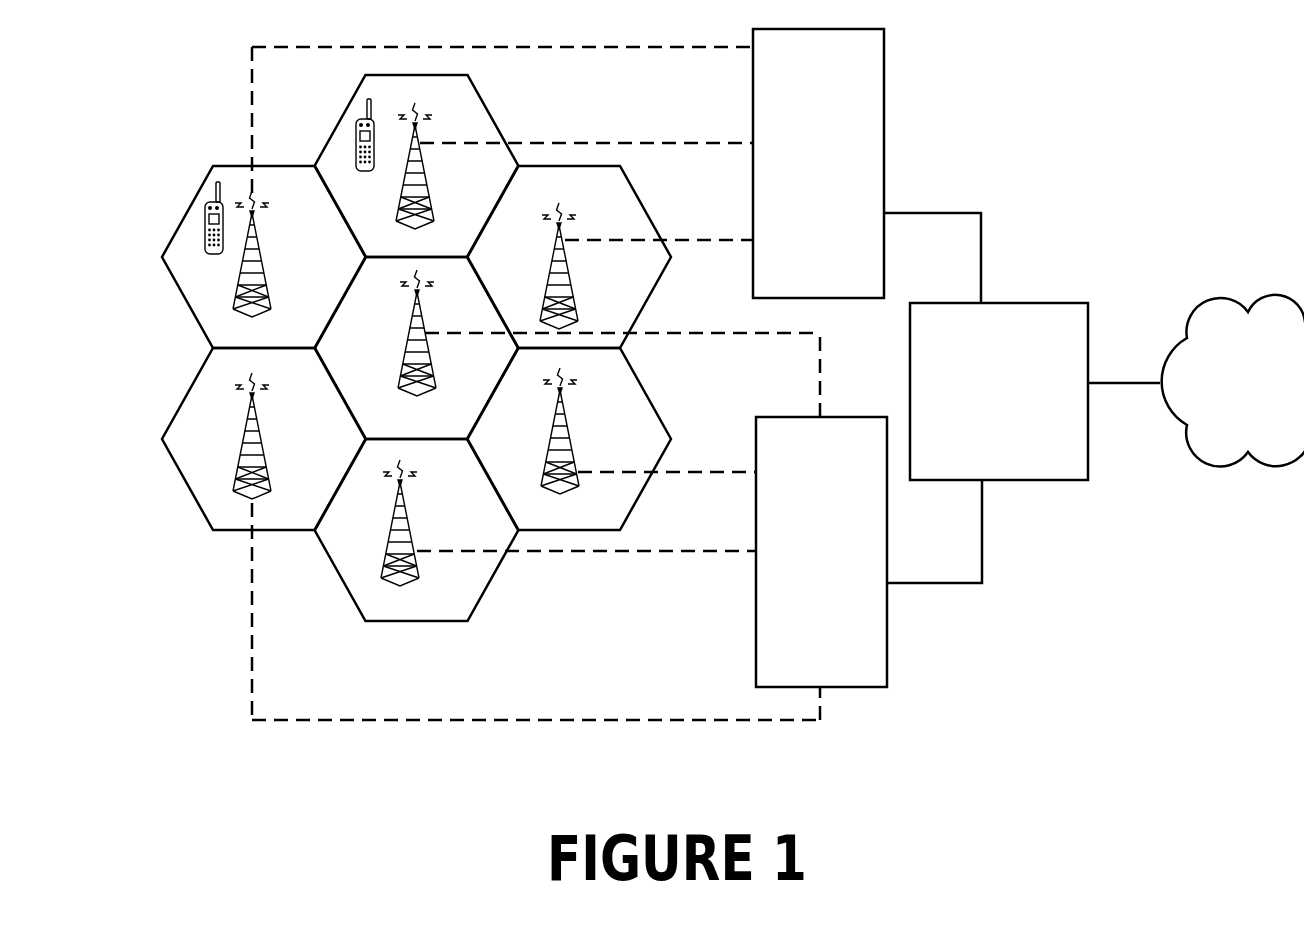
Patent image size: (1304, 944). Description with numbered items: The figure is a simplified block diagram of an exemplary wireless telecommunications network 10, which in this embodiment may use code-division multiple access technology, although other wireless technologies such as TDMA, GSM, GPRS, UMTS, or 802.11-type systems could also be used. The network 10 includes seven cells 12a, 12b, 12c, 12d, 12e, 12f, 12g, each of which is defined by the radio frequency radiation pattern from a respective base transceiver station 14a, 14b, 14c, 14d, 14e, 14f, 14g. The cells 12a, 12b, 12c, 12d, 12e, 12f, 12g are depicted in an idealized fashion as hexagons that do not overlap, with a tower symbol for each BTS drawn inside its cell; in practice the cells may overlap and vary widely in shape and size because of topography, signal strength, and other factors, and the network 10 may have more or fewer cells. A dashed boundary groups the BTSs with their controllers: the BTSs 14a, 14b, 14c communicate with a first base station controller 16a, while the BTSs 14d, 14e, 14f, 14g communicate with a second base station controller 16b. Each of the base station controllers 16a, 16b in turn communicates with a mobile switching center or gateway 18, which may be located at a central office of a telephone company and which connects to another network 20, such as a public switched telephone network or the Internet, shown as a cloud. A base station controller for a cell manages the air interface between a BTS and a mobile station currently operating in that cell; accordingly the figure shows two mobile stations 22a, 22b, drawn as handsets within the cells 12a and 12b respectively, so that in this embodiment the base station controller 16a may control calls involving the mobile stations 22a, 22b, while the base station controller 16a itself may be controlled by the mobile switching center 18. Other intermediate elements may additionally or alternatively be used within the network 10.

The wireless telecommunications network 10 is at (137, 128).
The cell 12a is at (187, 217).
The cell 12b is at (488, 108).
The cell 12c is at (648, 207).
The cell 12d is at (435, 424).
The cell 12e is at (181, 472).
The cell 12f is at (482, 597).
The cell 12g is at (640, 382).
The BTS 14a is at (258, 240).
The BTS 14b is at (426, 178).
The BTS 14c is at (565, 252).
The BTS 14d is at (431, 363).
The BTS 14e is at (258, 418).
The BTS 14f is at (406, 508).
The BTS 14g is at (567, 414).
The base station controller 16a is at (800, 205).
The base station controller 16b is at (802, 589).
The MSC or gateway 18 is at (986, 434).
The network 20 is at (1235, 408).
The mobile station 22a is at (207, 253).
The mobile station 22b is at (355, 167).